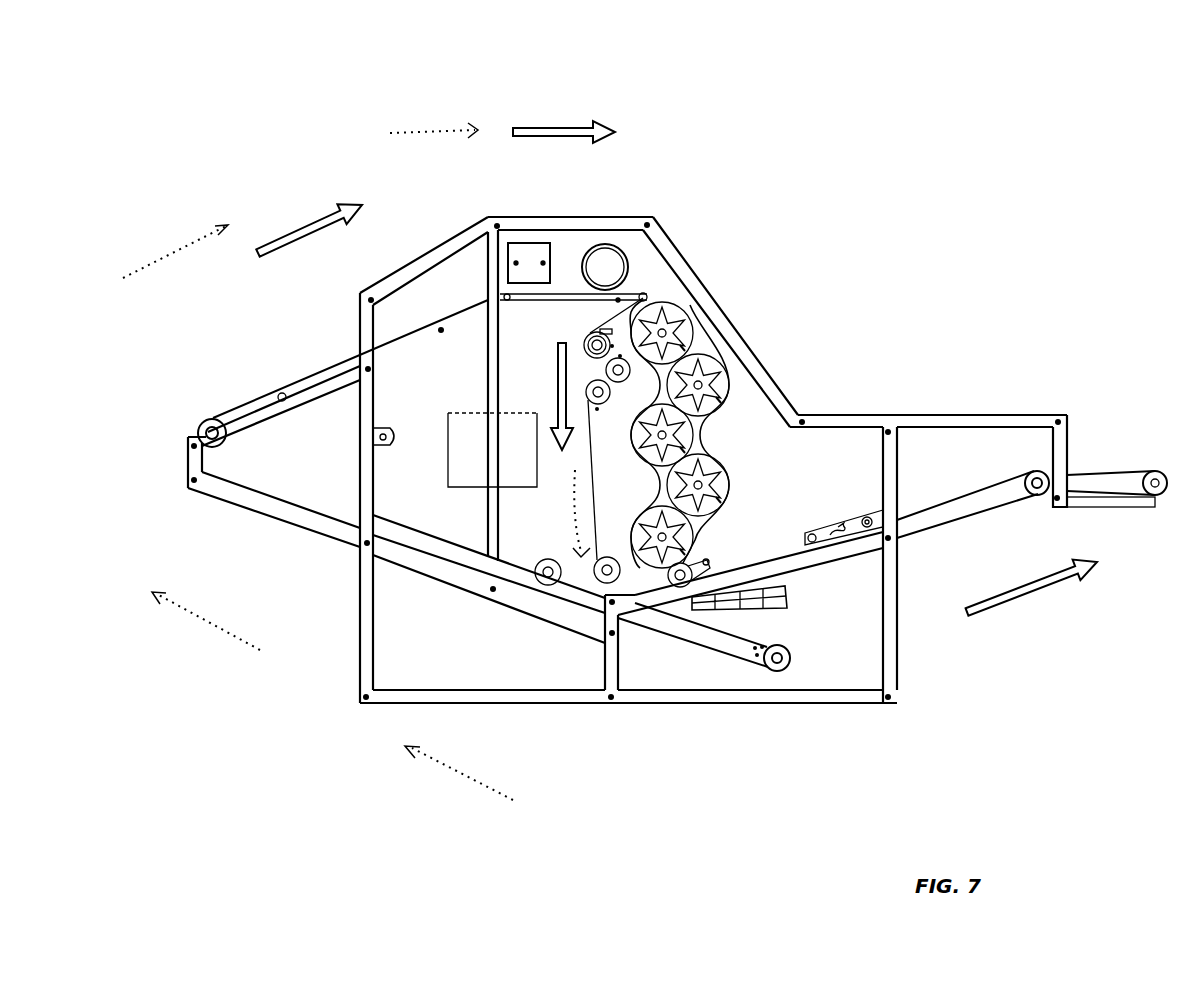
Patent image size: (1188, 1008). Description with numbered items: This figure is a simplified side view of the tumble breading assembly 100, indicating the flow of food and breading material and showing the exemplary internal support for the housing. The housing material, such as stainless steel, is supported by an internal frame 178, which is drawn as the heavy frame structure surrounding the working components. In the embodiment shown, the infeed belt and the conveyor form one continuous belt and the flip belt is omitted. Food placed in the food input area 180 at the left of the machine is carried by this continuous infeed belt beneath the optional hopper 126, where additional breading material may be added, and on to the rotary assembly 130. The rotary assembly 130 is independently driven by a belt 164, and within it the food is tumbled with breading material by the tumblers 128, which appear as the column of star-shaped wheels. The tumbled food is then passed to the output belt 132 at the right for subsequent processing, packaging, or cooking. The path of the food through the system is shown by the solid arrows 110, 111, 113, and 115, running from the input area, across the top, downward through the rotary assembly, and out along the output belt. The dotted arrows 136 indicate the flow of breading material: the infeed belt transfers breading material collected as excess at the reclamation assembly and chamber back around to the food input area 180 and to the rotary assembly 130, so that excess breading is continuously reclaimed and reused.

The assembly 100 is at (216, 163).
The arrow 110 is at (297, 243).
The arrow 111 is at (557, 131).
The arrow 113 is at (554, 379).
The arrow 115 is at (1036, 596).
The hopper 126 is at (522, 245).
The tumblers 128 is at (648, 530).
The rotary assembly 130 is at (682, 304).
The output belt 132 is at (1118, 473).
The dotted arrows 136 is at (172, 258).
The belt 164 is at (732, 337).
The internal frame 178 is at (782, 705).
The food input area 180 is at (281, 356).